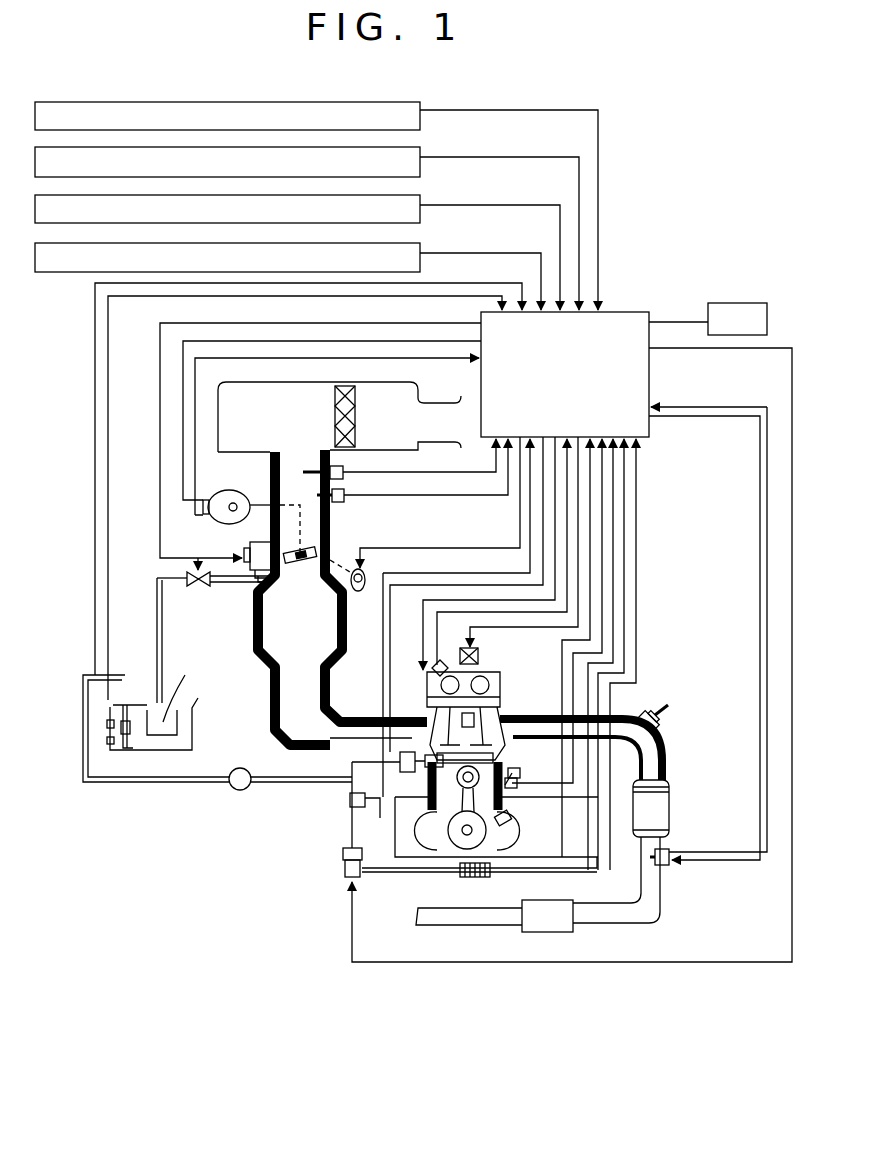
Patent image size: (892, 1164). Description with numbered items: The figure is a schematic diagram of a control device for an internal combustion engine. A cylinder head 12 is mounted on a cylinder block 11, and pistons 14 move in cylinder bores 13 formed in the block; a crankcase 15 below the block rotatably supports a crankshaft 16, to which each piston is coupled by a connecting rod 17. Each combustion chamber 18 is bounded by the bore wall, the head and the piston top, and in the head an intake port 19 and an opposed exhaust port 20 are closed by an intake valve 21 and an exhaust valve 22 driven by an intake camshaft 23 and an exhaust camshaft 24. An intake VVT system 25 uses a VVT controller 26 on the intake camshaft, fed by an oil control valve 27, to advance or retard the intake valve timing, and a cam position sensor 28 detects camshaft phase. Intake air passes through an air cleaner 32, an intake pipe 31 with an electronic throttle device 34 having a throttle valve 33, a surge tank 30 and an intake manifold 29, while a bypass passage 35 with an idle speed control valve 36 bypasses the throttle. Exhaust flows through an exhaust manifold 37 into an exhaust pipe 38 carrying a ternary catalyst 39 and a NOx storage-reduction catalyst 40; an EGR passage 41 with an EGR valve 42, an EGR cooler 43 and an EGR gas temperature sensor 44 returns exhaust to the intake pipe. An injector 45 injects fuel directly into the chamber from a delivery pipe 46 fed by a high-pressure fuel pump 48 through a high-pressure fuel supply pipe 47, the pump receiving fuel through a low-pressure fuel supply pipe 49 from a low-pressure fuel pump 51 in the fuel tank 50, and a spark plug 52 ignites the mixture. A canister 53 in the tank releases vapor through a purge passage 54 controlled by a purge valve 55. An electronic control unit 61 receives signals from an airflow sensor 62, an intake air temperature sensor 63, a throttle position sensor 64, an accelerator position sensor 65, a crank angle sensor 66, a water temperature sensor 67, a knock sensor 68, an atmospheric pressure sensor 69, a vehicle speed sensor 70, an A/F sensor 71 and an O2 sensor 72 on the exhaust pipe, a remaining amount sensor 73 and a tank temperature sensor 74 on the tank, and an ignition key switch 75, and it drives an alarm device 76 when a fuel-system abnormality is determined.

The cylinder block 11 is at (517, 790).
The cylinder head 12 is at (560, 690).
The cylinder bores 13 is at (418, 850).
The pistons 14 is at (448, 792).
The crankcase 15 is at (380, 860).
The crankshaft 16 is at (466, 835).
The connecting rod 17 is at (462, 815).
The combustion chamber 18 is at (546, 750).
The intake port 19 is at (413, 740).
The exhaust port 20 is at (560, 715).
The intake valve 21 is at (430, 672).
The exhaust valve 22 is at (500, 720).
The intake camshaft 23 is at (445, 662).
The exhaust camshaft 24 is at (492, 678).
The intake VVT system 25 is at (478, 650).
The VVT controller 26 is at (430, 680).
The oil control valve 27 is at (430, 670).
The cam position sensor 28 is at (440, 660).
The intake manifold 29 is at (348, 699).
The surge tank 30 is at (337, 627).
The intake pipe 31 is at (270, 462).
The air cleaner 32 is at (365, 382).
The throttle valve 33 is at (322, 549).
The electronic throttle device 34 is at (366, 572).
The bypass passage 35 is at (248, 546).
The idle speed control valve 36 is at (258, 582).
The exhaust manifold 37 is at (565, 740).
The exhaust pipe 38 is at (662, 890).
The ternary catalyst 39 is at (669, 805).
The NOx storage-reduction catalyst 40 is at (545, 932).
The EGR passage 41 is at (598, 875).
The EGR valve 42 is at (343, 856).
The EGR cooler 43 is at (492, 875).
The EGR gas temperature sensor 44 is at (380, 818).
The injector 45 is at (390, 737).
The delivery pipe 46 is at (352, 763).
The high-pressure fuel supply pipe 47 is at (292, 784).
The high-pressure fuel pump 48 is at (240, 790).
The low-pressure fuel supply pipe 49 is at (150, 785).
The fuel tank 50 is at (195, 733).
The low-pressure fuel pump 51 is at (120, 740).
The spark plug 52 is at (530, 705).
The canister 53 is at (185, 687).
The purge passage 54 is at (155, 618).
The purge valve 55 is at (196, 590).
The electronic control unit 61 is at (640, 312).
The airflow sensor 62 is at (343, 470).
The intake air temperature sensor 63 is at (344, 500).
The throttle position sensor 64 is at (225, 490).
The accelerator position sensor 65 is at (425, 108).
The crank angle sensor 66 is at (540, 872).
The water temperature sensor 67 is at (515, 778).
The knock sensor 68 is at (500, 822).
The atmospheric pressure sensor 69 is at (425, 153).
The vehicle speed sensor 70 is at (425, 201).
The A/F sensor 71 is at (676, 710).
The O2 sensor 72 is at (696, 855).
The remaining amount sensor 73 is at (107, 745).
The tank temperature sensor 74 is at (107, 723).
The ignition key switch 75 is at (425, 249).
The alarm device 76 is at (730, 303).